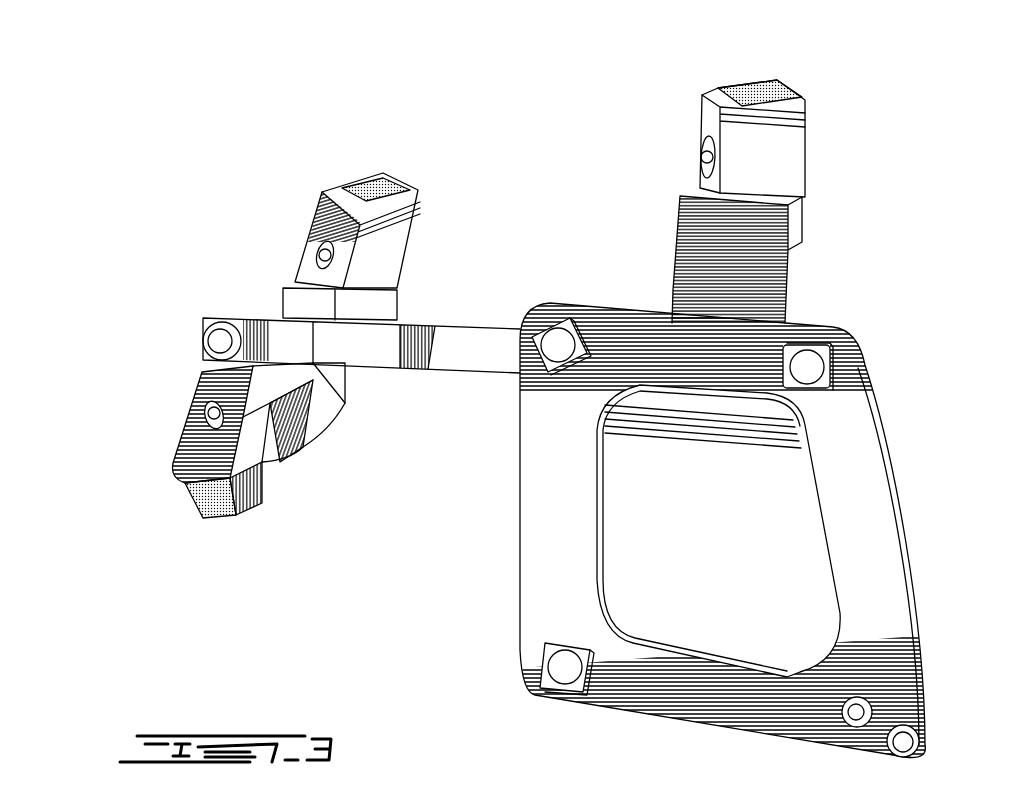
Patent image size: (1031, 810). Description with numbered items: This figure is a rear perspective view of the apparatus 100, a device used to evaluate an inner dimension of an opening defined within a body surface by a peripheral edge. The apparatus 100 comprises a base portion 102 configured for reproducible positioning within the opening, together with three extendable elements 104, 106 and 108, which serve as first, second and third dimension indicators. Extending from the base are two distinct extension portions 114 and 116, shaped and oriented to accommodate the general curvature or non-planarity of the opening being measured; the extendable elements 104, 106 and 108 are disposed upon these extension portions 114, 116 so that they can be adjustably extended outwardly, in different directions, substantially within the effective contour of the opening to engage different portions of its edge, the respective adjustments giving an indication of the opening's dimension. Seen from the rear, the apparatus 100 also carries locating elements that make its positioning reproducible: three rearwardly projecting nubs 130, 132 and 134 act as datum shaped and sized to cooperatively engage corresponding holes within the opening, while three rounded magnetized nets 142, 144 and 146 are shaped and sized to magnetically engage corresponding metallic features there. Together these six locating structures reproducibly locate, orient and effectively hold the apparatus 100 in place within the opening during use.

The apparatus 100 is at (540, 90).
The base portion 102 is at (720, 535).
The extendable element 104 is at (790, 148).
The extendable element 106 is at (392, 238).
The extendable element 108 is at (258, 480).
The extension portion 114 is at (755, 278).
The extension portion 116 is at (457, 350).
The rearwardly projecting nub 130 is at (905, 741).
The rearwardly projecting nub 132 is at (852, 712).
The rearwardly projecting nub 134 is at (222, 341).
The rounded magnetized net 142 is at (807, 367).
The rounded magnetized net 144 is at (565, 667).
The rounded magnetized net 146 is at (553, 343).